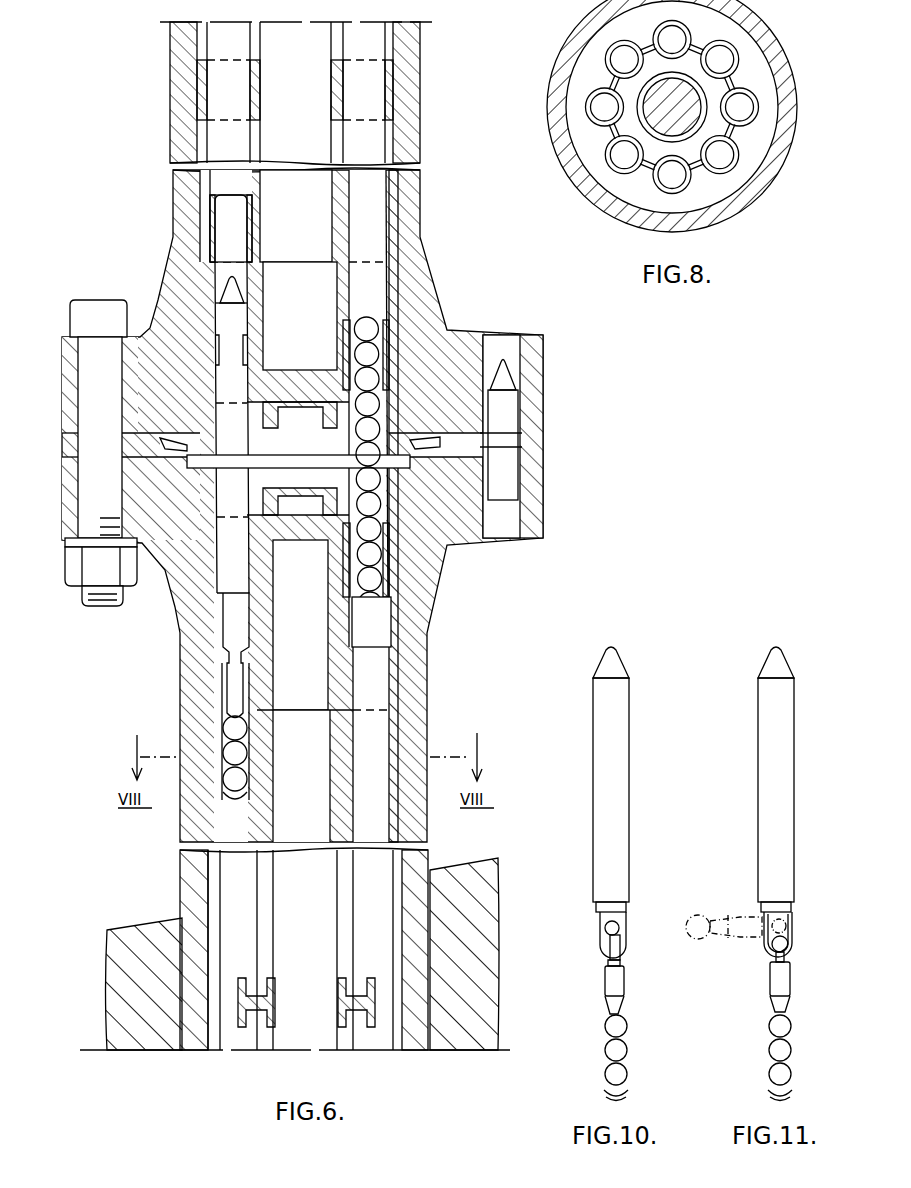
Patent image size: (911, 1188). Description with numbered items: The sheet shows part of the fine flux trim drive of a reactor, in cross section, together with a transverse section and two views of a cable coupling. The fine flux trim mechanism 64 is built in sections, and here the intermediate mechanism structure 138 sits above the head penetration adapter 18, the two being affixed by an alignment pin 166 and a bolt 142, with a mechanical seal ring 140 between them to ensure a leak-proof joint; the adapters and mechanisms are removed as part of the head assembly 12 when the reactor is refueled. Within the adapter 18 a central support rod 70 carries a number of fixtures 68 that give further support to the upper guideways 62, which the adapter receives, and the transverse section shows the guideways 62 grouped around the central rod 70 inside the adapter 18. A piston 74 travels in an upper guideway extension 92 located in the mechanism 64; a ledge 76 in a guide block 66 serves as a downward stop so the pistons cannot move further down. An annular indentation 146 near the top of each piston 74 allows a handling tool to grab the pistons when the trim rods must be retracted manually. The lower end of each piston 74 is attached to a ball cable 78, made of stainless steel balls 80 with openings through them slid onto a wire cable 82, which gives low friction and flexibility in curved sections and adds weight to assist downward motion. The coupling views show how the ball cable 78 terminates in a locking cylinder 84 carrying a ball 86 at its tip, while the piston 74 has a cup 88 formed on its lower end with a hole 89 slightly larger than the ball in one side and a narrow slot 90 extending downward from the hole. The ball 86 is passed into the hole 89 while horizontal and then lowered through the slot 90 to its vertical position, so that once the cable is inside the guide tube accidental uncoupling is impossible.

In FIG. 6, the head assembly 12 is at (483, 890).
In FIG. 6, the head penetration adapter 18 is at (435, 608).
In FIG. 8, the head penetration adapter 18 is at (785, 145).
In FIG. 8, the upper guideway 62 is at (758, 105).
In FIG. 6, the mechanism 64 is at (420, 112).
In FIG. 6, the guide block 66 is at (398, 678).
In FIG. 6, the fixture 68 is at (345, 1002).
In FIG. 6, the central support rod 70 is at (332, 919).
In FIG. 8, the central support rod 70 is at (690, 92).
In FIG. 6, the piston 74 is at (241, 565).
In FIG. 10, the piston 74 is at (624, 798).
In FIG. 11, the piston 74 is at (786, 794).
In FIG. 6, the ledge 76 is at (353, 602).
In FIG. 6, the ball cable 78 is at (364, 320).
In FIG. 10, the ball 80 is at (628, 1072).
In FIG. 11, the ball 80 is at (787, 1024).
In FIG. 10, the wire cable 82 is at (661, 1051).
In FIG. 11, the wire cable 82 is at (827, 1071).
In FIG. 10, the locking cylinder 84 is at (626, 984).
In FIG. 11, the locking cylinder 84 is at (786, 982).
In FIG. 10, the ball 86 is at (620, 946).
In FIG. 11, the ball 86 is at (788, 940).
In FIG. 10, the cup 88 is at (630, 928).
In FIG. 11, the cup 88 is at (792, 916).
In FIG. 10, the hole 89 is at (605, 928).
In FIG. 10, the slot 90 is at (607, 961).
In FIG. 6, the upper guideway extension 92 is at (208, 218).
In FIG. 6, the intermediate mechanism structure 138 is at (156, 100).
In FIG. 6, the seal ring 140 is at (160, 437).
In FIG. 6, the bolt 142 is at (92, 312).
In FIG. 6, the annular indentation 146 is at (245, 348).
In FIG. 6, the alignment pin 166 is at (507, 407).